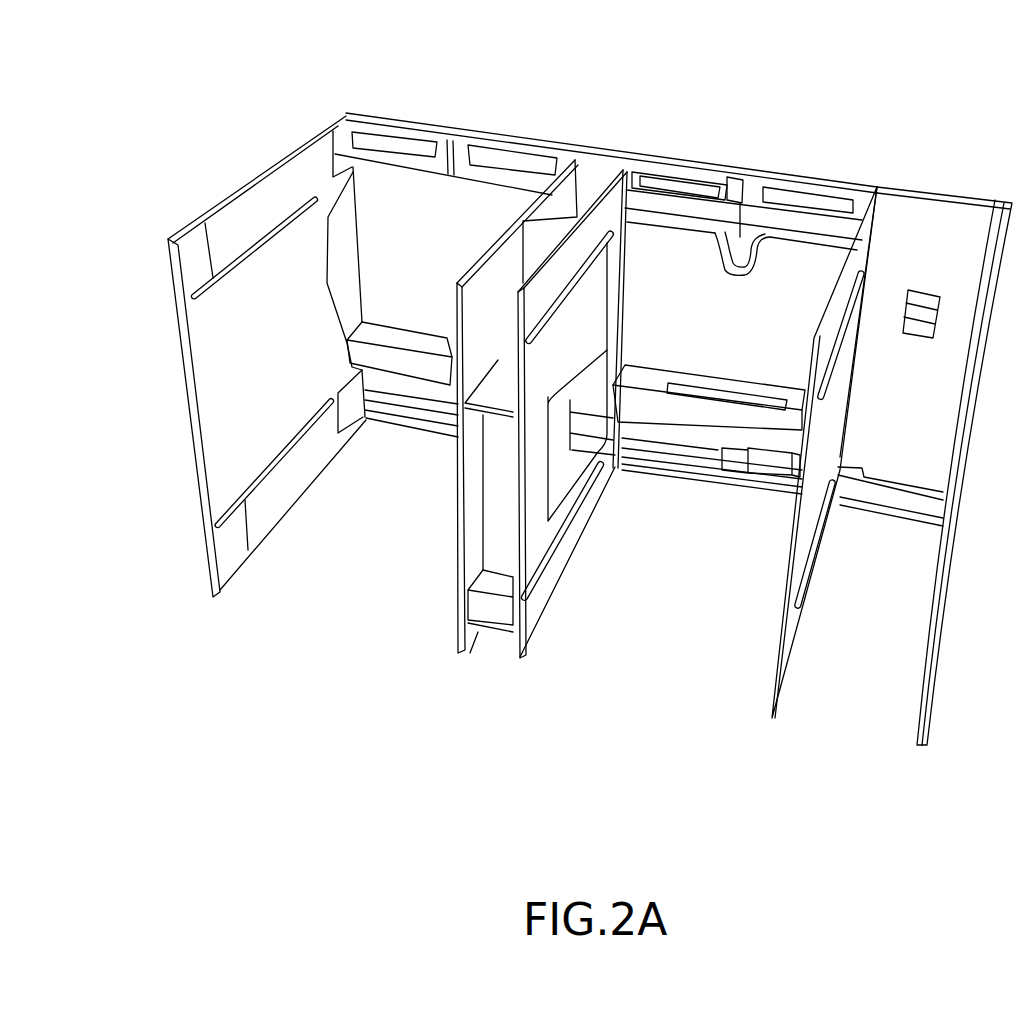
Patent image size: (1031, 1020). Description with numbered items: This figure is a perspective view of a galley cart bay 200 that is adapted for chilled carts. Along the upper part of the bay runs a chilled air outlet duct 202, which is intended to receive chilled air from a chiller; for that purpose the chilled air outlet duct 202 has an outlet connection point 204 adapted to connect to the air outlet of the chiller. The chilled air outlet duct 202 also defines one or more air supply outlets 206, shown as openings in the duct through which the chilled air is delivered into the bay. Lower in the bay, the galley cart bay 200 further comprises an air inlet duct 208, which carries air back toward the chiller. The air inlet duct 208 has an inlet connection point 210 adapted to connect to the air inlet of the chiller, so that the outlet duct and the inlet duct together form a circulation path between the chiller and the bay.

The galley cart bay 200 is at (217, 51).
The chilled air outlet duct 202 is at (786, 224).
The outlet connection point 204 is at (736, 278).
The air supply outlet 206 is at (682, 182).
The air inlet duct 208 is at (722, 428).
The inlet connection point 210 is at (725, 390).